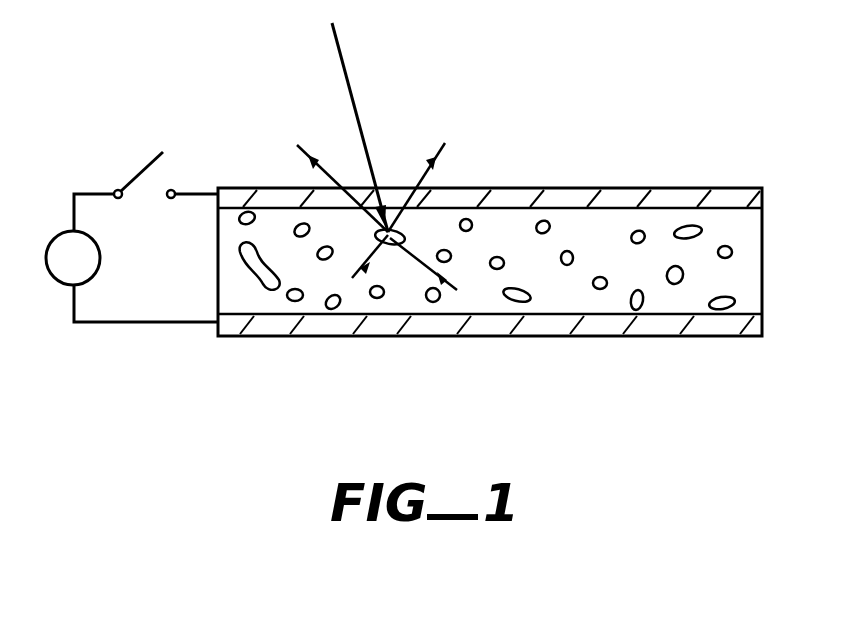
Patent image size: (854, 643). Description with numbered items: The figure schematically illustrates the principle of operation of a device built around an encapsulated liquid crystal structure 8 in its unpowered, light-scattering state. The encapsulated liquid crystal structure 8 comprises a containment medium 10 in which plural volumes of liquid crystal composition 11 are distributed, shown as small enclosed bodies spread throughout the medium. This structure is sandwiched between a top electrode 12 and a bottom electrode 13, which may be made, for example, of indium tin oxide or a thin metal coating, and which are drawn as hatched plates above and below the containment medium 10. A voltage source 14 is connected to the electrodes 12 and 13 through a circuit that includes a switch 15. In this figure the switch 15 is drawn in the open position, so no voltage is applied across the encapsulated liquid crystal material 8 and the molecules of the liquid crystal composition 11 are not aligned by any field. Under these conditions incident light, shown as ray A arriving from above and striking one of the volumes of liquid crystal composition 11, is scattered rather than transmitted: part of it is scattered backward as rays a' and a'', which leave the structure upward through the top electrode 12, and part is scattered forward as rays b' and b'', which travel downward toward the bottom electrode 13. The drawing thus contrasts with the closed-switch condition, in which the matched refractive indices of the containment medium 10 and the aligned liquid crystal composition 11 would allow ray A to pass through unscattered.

The encapsulated liquid crystal structure 8 is at (306, 322).
The containment medium 10 is at (572, 220).
The liquid crystal composition 11 is at (598, 290).
The top electrode 12 is at (700, 188).
The bottom electrode 13 is at (713, 325).
The voltage source 14 is at (90, 283).
The switch 15 is at (140, 172).
The incident light ray A is at (353, 116).
The backward scattered ray a' is at (333, 176).
The backward scattered ray a'' is at (427, 175).
The forward scattered ray b' is at (370, 324).
The forward scattered ray b'' is at (431, 325).